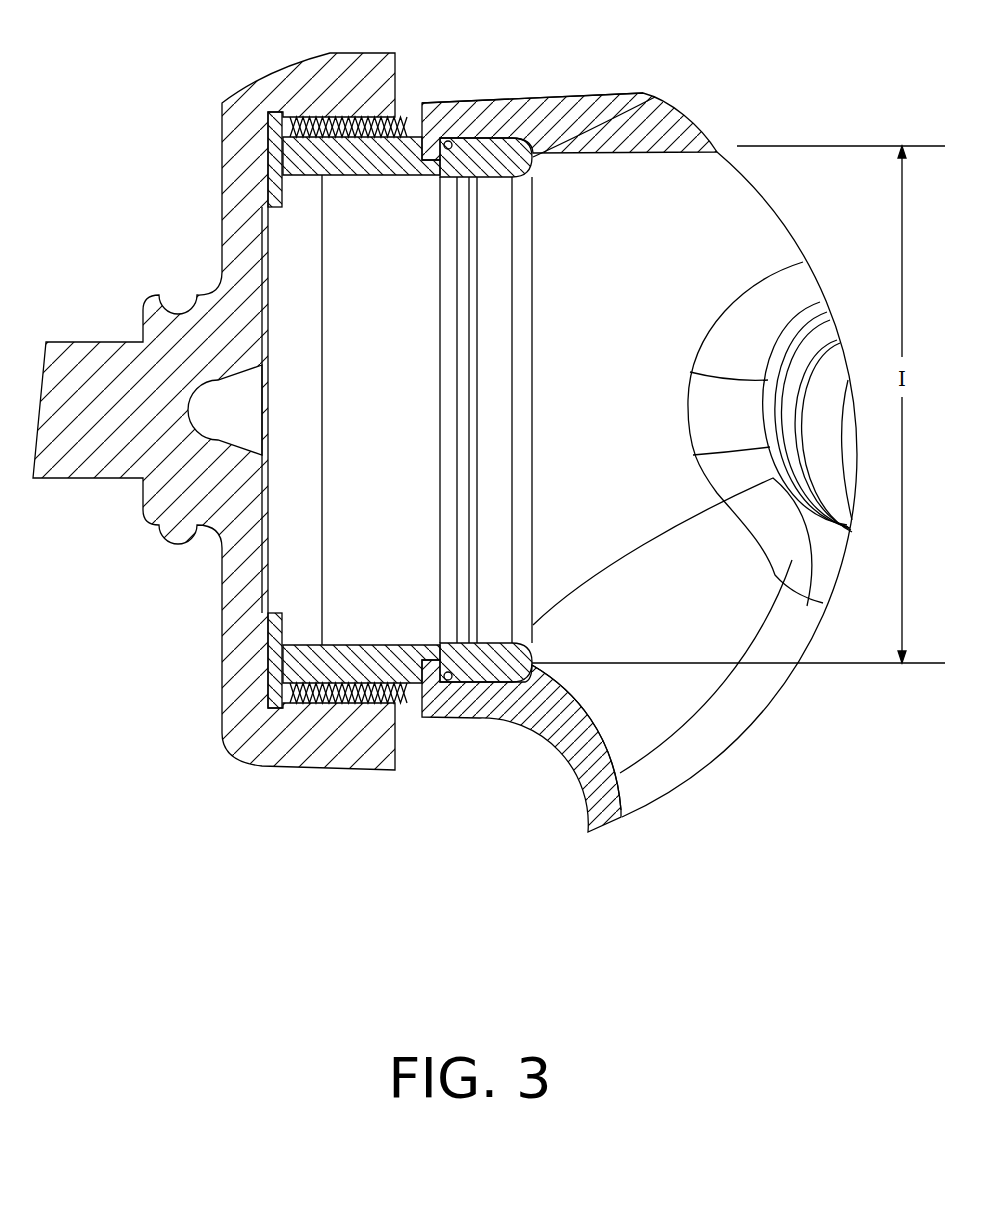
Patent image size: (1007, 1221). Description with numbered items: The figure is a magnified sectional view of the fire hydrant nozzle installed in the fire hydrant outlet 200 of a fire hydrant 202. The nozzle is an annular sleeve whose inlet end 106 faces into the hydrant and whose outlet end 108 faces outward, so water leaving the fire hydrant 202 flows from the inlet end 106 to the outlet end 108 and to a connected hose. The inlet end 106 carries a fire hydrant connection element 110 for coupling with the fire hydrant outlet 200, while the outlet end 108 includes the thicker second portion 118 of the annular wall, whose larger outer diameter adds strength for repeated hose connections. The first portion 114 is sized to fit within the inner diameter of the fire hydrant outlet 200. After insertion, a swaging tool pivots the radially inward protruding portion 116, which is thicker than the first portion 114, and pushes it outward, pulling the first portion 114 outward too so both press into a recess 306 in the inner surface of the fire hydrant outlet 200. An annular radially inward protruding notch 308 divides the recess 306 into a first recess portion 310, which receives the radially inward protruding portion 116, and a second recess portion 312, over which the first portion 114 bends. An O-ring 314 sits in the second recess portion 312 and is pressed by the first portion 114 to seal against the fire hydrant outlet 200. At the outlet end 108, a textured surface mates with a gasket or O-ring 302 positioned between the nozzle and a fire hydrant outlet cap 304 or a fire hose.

The inlet end 106 is at (532, 382).
The outlet end 108 is at (288, 395).
The fire hydrant connection element 110 is at (553, 107).
The first portion 114 is at (517, 230).
The radially inward protruding portion 116 is at (512, 195).
The second portion 118 is at (352, 165).
The fire hydrant outlet 200 is at (480, 103).
The fire hydrant 202 is at (580, 812).
The gasket or O-ring 302 is at (273, 130).
The fire hydrant outlet cap 304 is at (240, 180).
The recess 306 is at (580, 105).
The radially inward protruding notch 308 is at (525, 178).
The first recess portion 310 is at (657, 104).
The second recess portion 312 is at (458, 142).
The O-ring 314 is at (440, 142).